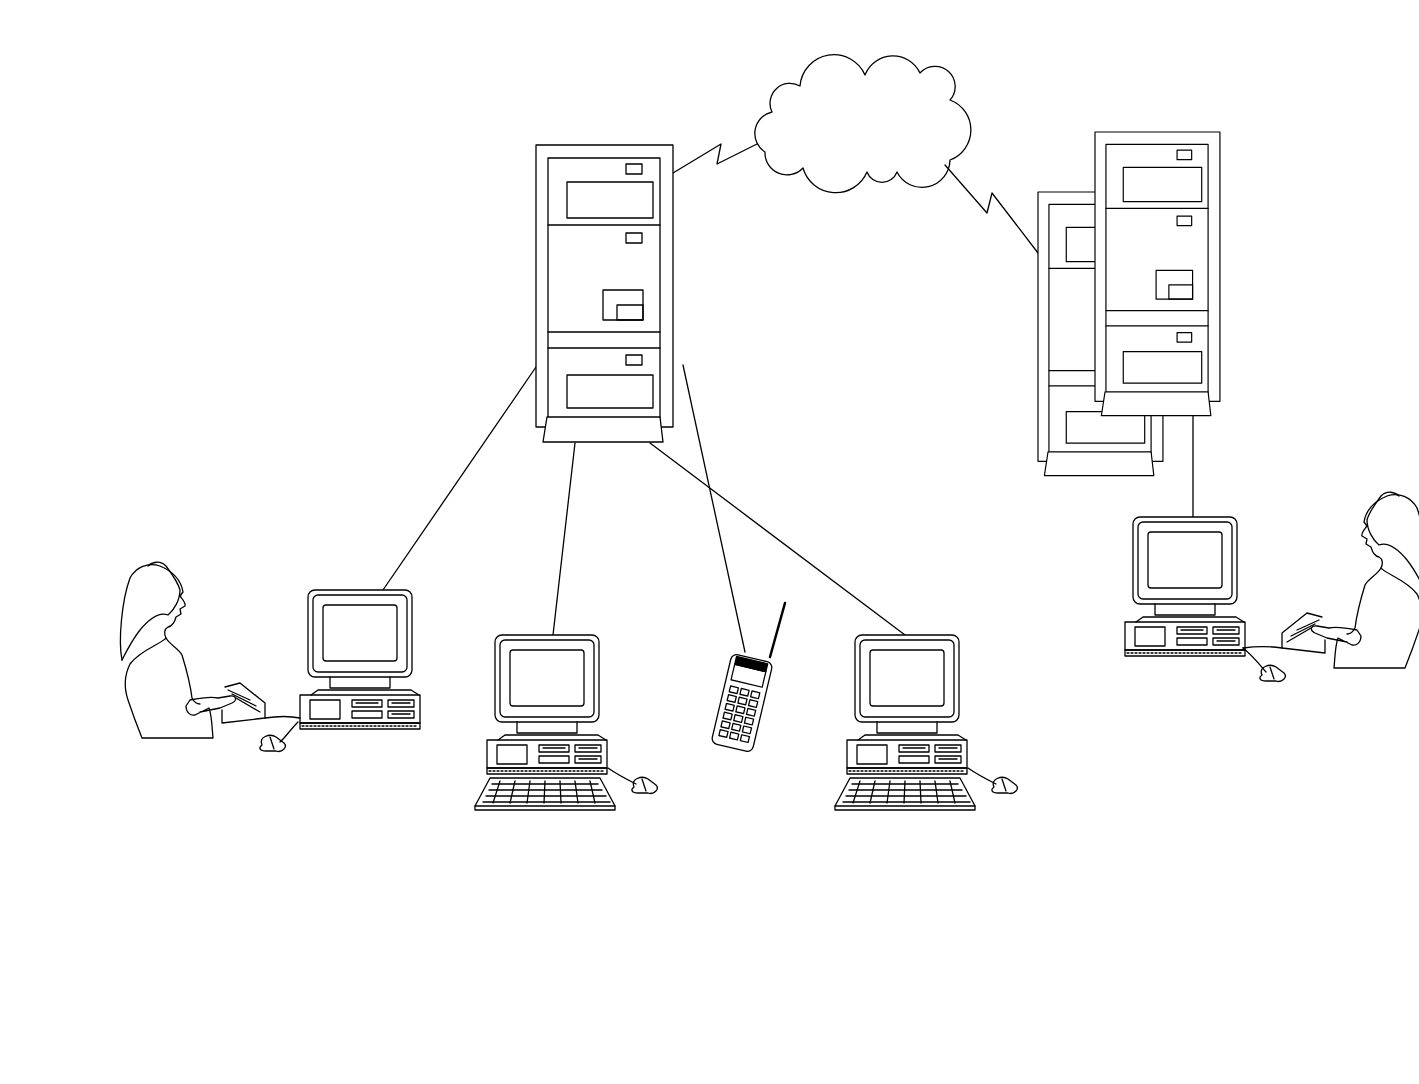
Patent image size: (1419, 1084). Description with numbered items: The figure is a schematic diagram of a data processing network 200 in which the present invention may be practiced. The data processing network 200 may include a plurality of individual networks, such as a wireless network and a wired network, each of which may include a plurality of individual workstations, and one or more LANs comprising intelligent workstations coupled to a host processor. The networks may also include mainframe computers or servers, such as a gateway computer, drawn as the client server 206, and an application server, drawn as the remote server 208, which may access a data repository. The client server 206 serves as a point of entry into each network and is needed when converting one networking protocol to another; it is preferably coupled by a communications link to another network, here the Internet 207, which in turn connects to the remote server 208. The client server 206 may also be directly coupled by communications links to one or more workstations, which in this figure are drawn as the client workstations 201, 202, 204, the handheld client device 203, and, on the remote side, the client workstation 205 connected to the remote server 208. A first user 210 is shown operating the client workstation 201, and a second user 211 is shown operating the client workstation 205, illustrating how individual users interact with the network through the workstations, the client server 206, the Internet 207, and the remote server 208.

The data processing network 200 is at (221, 291).
The client 1 computer 201 is at (333, 590).
The client 2 computer 202 is at (510, 635).
The client 3 mobile phone 203 is at (725, 677).
The client 4 computer 204 is at (918, 635).
The client 5 computer 205 is at (1133, 540).
The client server 206 is at (536, 178).
The Internet 207 is at (884, 172).
The remote server 208 is at (1222, 178).
The user 1 210 is at (150, 565).
The user 5 211 is at (1400, 496).